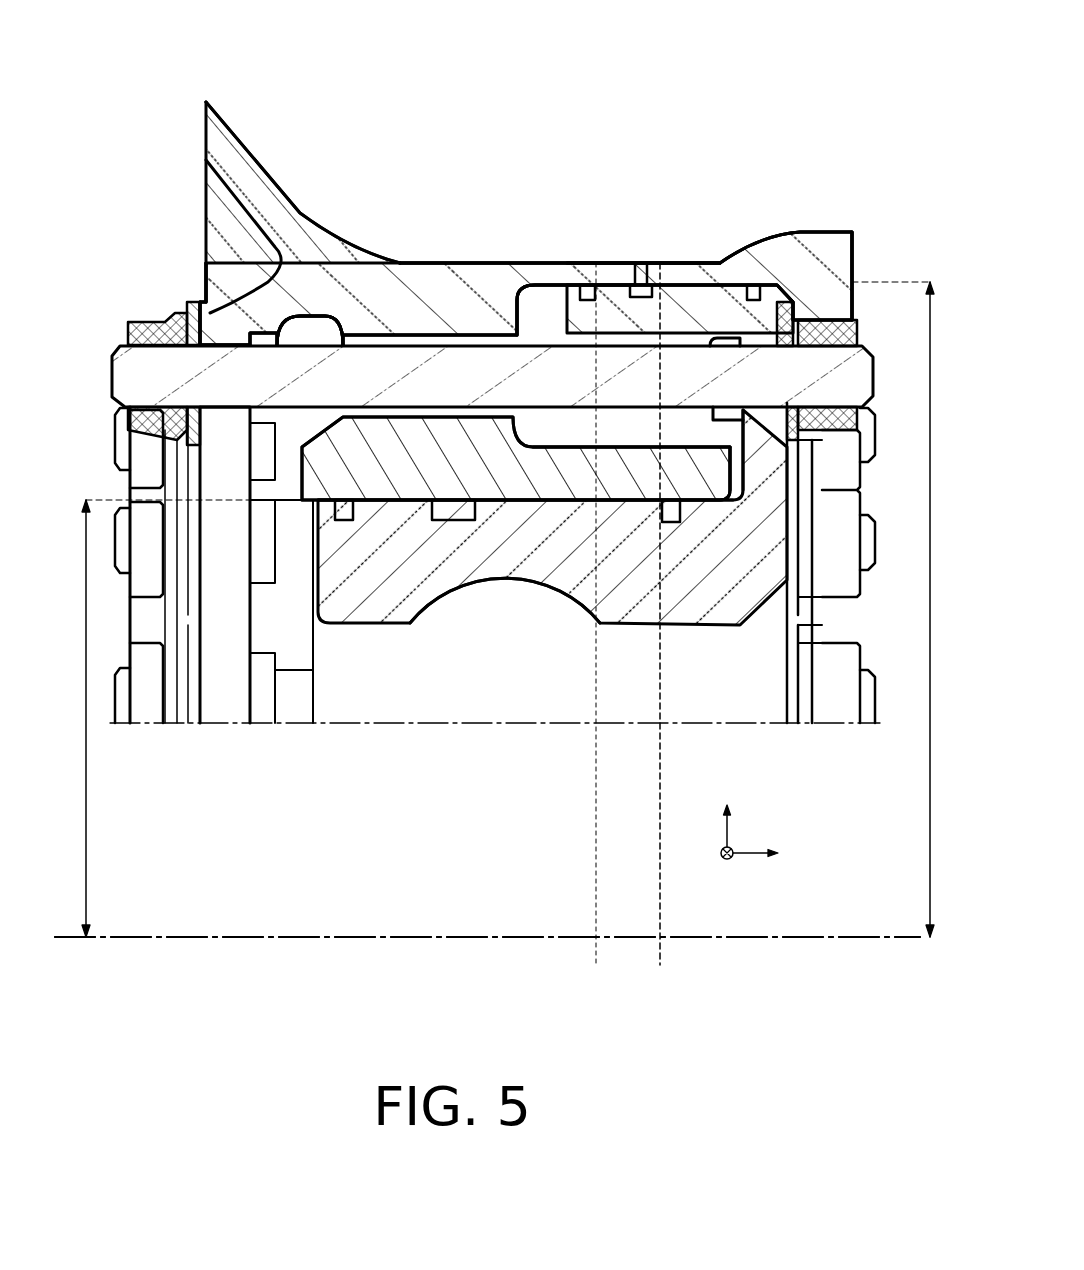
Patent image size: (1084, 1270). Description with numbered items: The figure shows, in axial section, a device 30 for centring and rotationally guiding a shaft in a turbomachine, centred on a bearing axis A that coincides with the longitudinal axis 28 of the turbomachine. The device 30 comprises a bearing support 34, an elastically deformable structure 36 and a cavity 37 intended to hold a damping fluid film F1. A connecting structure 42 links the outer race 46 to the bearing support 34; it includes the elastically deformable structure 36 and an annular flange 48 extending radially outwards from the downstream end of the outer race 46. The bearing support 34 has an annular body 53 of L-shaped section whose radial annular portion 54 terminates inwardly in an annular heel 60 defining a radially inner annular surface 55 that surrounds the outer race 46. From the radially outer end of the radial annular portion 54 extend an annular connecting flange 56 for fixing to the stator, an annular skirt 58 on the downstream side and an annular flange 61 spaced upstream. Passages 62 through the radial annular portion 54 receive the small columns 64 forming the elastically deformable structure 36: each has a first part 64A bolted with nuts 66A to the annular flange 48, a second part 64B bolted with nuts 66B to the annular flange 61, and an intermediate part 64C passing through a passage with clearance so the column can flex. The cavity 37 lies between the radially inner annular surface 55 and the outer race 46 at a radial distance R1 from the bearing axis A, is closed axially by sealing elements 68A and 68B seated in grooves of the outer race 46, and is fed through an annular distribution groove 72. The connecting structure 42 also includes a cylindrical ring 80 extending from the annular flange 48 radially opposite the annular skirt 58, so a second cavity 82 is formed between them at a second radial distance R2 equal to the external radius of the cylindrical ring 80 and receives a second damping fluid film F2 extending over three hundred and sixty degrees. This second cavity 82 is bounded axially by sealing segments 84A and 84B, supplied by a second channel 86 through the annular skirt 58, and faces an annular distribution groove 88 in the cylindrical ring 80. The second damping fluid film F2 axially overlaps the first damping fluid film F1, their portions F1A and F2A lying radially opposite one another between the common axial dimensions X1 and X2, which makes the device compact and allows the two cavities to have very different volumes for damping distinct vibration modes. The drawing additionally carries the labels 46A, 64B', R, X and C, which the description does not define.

The device 30 is at (595, 97).
The bearing support 34 is at (305, 215).
The elastically deformable structure 36 is at (526, 264).
The cavity 37 is at (565, 503).
The connecting structure 42 is at (526, 264).
The outer race 46 is at (368, 612).
The arcuate surface 46A is at (453, 598).
The annular flange 48 is at (772, 458).
The annular body 53 is at (317, 428).
The radial annular portion 54 is at (345, 290).
The radially inner annular surface 55 is at (513, 507).
The annular connecting flange 56 is at (225, 145).
The annular skirt 58 is at (567, 272).
The annular heel 60 is at (668, 522).
The annular flange 61 is at (215, 313).
The passages 62 is at (380, 335).
The small columns 64 is at (458, 340).
The first part 64A is at (858, 373).
The second part 64B is at (151, 361).
The lobe 64B' is at (209, 238).
The intermediate part 64C is at (350, 333).
The nuts 66A is at (832, 323).
The nuts 66B is at (152, 322).
The sealing element 68A is at (673, 455).
The sealing element 68B is at (343, 515).
The annular distribution groove 72 is at (447, 512).
The cylindrical ring 80 is at (720, 317).
The second cavity 82 is at (660, 300).
The sealing segment 84A is at (762, 290).
The sealing segment 84B is at (580, 340).
The second channel 86 is at (640, 262).
The annular distribution groove 88 is at (668, 300).
The damping fluid film F1 is at (516, 602).
The portion of the first damping fluid film F1A is at (632, 480).
The second damping fluid film F2 is at (661, 184).
The portion of the second damping fluid film F2A is at (600, 330).
The radial distance R1 is at (200, 718).
The second radial distance R2 is at (893, 609).
The axial dimension X1 is at (596, 630).
The axial dimension X2 is at (660, 630).
The bearing axis A is at (828, 937).
The longitudinal axis 28 is at (487, 976).
The radial direction R is at (727, 810).
The axial direction X is at (768, 854).
The circumferential direction C is at (717, 871).